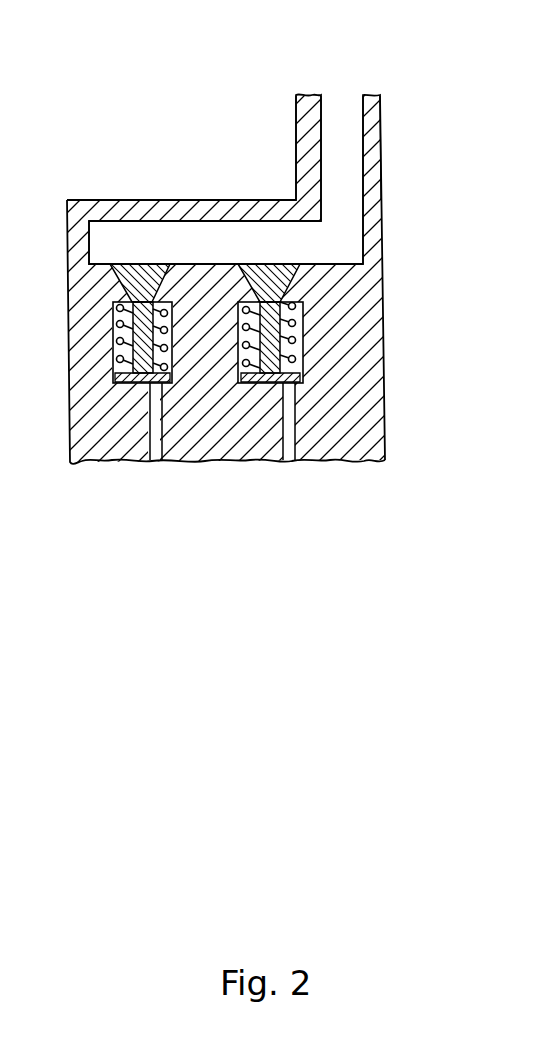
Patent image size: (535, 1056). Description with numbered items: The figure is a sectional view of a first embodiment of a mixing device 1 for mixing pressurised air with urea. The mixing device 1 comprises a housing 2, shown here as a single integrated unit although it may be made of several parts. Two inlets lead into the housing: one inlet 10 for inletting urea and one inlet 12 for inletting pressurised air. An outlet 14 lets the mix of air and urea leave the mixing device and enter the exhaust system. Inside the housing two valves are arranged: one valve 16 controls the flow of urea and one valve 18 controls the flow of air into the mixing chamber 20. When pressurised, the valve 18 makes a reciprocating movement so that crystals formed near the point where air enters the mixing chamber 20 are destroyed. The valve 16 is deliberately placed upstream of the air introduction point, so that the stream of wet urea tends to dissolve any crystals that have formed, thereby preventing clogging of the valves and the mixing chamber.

The mixing device 1 is at (400, 127).
The housing 2 is at (84, 462).
The inlet 10 is at (152, 462).
The inlet 12 is at (288, 462).
The outlet 14 is at (327, 110).
The valve 16 is at (142, 282).
The valve 18 is at (268, 275).
The mixing chamber 20 is at (112, 240).